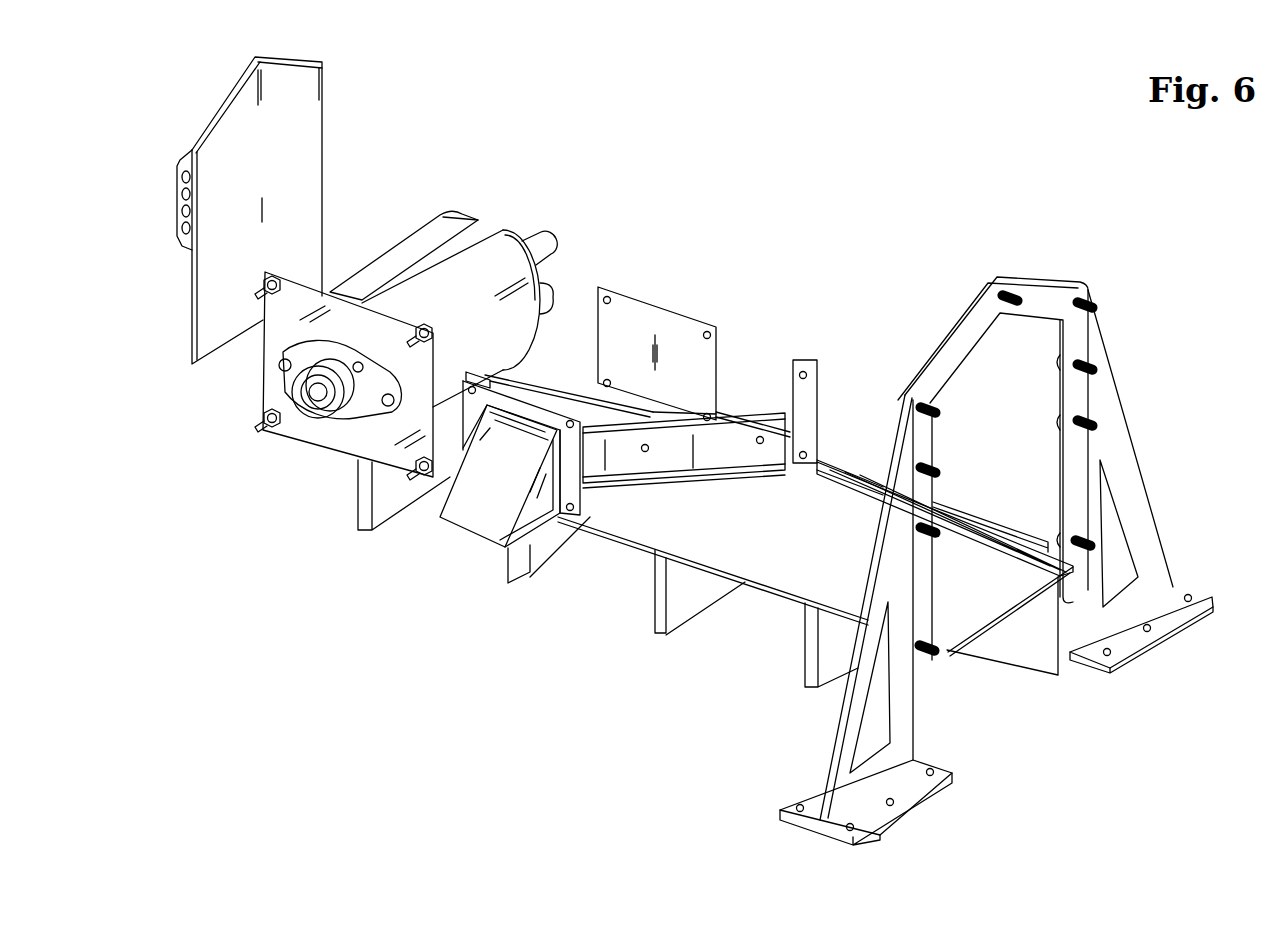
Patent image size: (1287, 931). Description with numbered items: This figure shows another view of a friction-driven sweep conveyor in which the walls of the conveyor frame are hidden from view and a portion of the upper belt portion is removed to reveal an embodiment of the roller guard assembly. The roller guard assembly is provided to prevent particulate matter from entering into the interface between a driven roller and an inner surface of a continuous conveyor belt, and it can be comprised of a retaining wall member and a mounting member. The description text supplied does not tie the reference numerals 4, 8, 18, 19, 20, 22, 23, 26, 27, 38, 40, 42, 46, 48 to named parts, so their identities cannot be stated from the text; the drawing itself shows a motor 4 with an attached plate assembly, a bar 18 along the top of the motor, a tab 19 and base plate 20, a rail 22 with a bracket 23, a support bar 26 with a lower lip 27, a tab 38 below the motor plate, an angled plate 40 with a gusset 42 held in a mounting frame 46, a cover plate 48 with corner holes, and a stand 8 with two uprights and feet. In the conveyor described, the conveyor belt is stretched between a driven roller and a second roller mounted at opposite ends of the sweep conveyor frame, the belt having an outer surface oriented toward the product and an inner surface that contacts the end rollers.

The motor 4 is at (464, 326).
The stand 8 is at (1023, 277).
The motor mounting strap 18 is at (413, 263).
The mounting tab 19 is at (688, 620).
The base plate 20 is at (806, 554).
The rail 22 is at (760, 372).
The bracket 23 is at (815, 392).
The support bar 26 is at (733, 461).
The bar lip 27 is at (680, 482).
The plate tab 38 is at (440, 538).
The angled plate 40 is at (514, 479).
The gusset 42 is at (559, 509).
The mounting frame 46 is at (528, 400).
The cover plate 48 is at (692, 376).